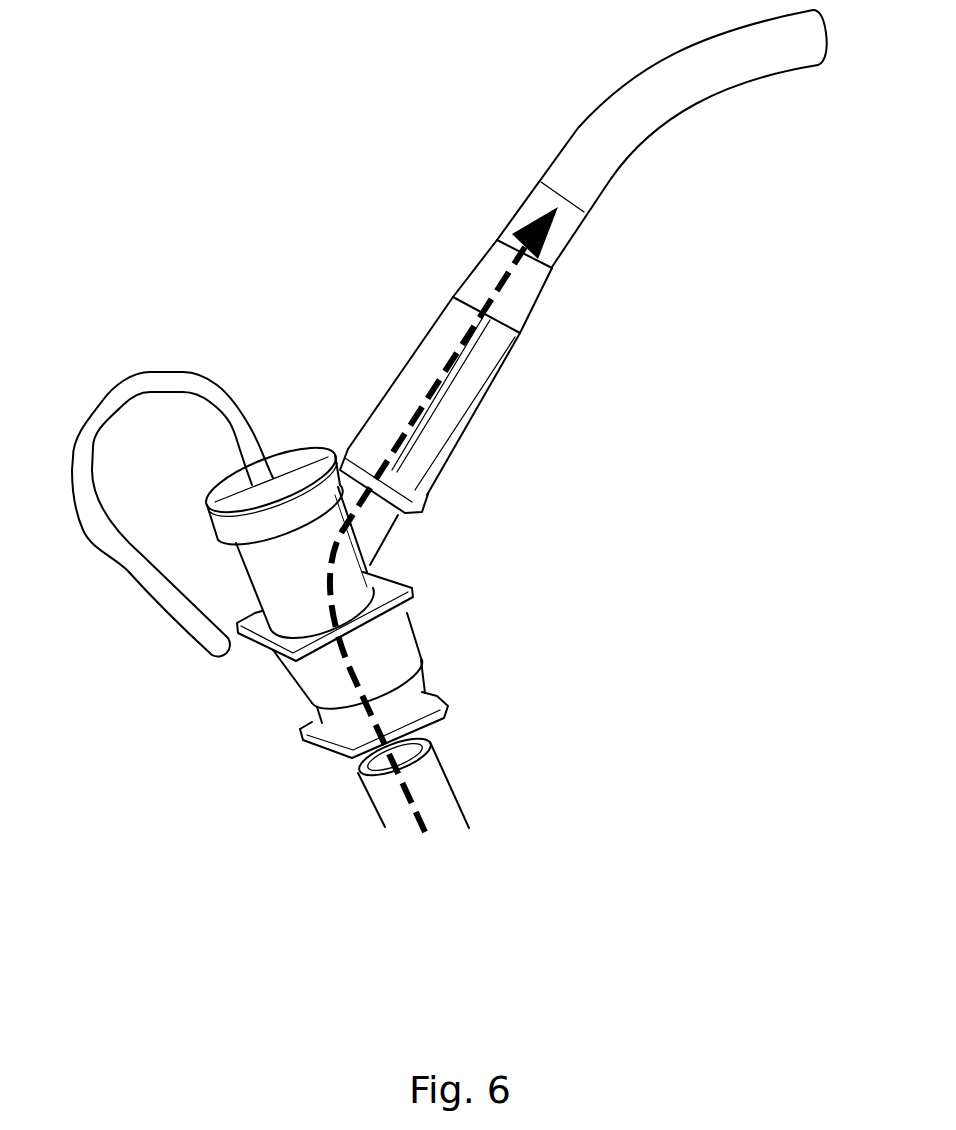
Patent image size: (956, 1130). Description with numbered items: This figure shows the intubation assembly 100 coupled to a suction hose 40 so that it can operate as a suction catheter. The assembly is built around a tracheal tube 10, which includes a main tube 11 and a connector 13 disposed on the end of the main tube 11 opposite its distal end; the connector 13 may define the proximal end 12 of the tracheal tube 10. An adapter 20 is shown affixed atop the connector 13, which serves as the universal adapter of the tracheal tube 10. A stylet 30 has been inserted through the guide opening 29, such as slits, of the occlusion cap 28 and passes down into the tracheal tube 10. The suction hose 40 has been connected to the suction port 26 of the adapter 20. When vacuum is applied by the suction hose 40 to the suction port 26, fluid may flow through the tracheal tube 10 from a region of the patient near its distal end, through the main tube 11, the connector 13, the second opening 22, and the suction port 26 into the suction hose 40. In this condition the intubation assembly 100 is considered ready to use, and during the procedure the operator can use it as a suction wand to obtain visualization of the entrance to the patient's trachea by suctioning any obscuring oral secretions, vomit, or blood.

The intubation assembly 100 is at (228, 143).
The tracheal tube 10 is at (390, 872).
The main tube 11 is at (462, 812).
The proximal end 12 is at (410, 665).
The connector 13 is at (443, 718).
The adapter 20 is at (232, 676).
The second opening 22 is at (300, 703).
The suction port 26 is at (400, 516).
The occlusion cap 28 is at (327, 450).
The guide opening 29 is at (272, 483).
The stylet 30 is at (112, 386).
The suction hose 40 is at (480, 258).